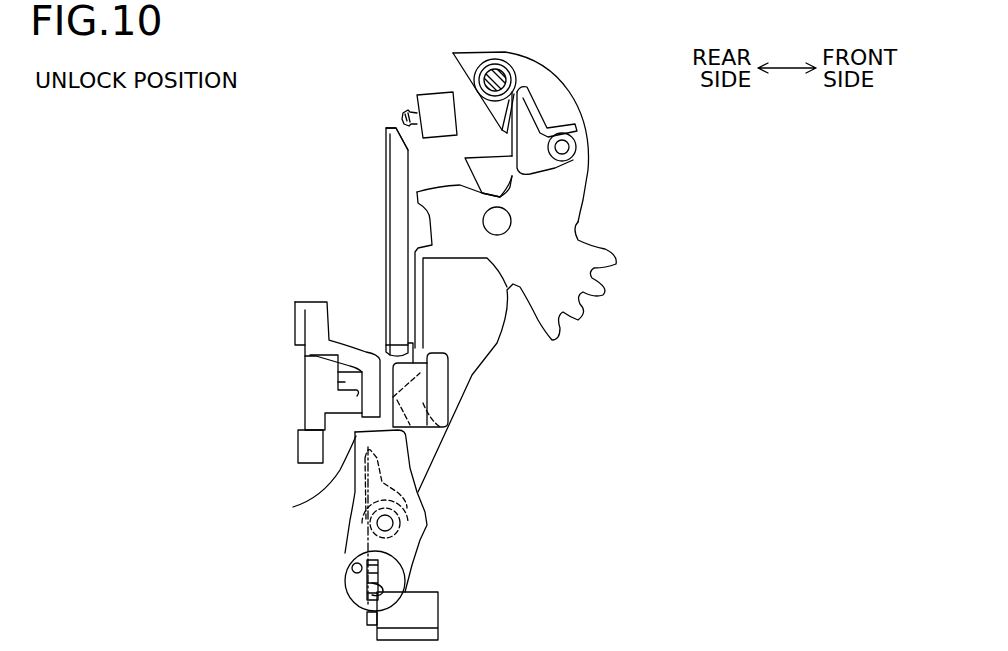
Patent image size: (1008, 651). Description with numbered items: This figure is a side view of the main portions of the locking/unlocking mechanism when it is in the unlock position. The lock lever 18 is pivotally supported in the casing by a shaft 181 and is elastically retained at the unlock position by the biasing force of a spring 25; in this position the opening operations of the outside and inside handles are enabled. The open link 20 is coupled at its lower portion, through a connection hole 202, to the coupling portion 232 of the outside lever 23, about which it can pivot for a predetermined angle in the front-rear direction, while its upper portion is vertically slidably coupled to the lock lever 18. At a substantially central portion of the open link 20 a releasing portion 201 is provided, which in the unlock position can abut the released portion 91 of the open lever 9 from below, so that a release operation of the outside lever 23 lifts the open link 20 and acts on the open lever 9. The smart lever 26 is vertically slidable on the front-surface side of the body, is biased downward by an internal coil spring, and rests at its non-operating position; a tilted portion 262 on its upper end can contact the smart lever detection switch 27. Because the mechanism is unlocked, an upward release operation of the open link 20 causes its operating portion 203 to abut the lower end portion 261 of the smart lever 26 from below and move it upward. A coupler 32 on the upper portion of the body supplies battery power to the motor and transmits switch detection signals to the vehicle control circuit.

The open lever 9 is at (314, 290).
The lock lever 18 is at (549, 272).
The open link 20 is at (382, 527).
The outside lever 23 is at (450, 611).
The spring 25 is at (516, 75).
The smart lever 26 is at (325, 256).
The smart lever detection switch 27 is at (435, 92).
The coupler 32 is at (408, 524).
The released portion 91 is at (311, 478).
The shaft 181 is at (511, 218).
The releasing portion 201 is at (408, 430).
The connection hole 202 is at (360, 568).
The operating portion 203 is at (413, 347).
The coupling portion 232 is at (365, 583).
The lower end portion 261 is at (385, 369).
The tilted portion 262 is at (392, 126).